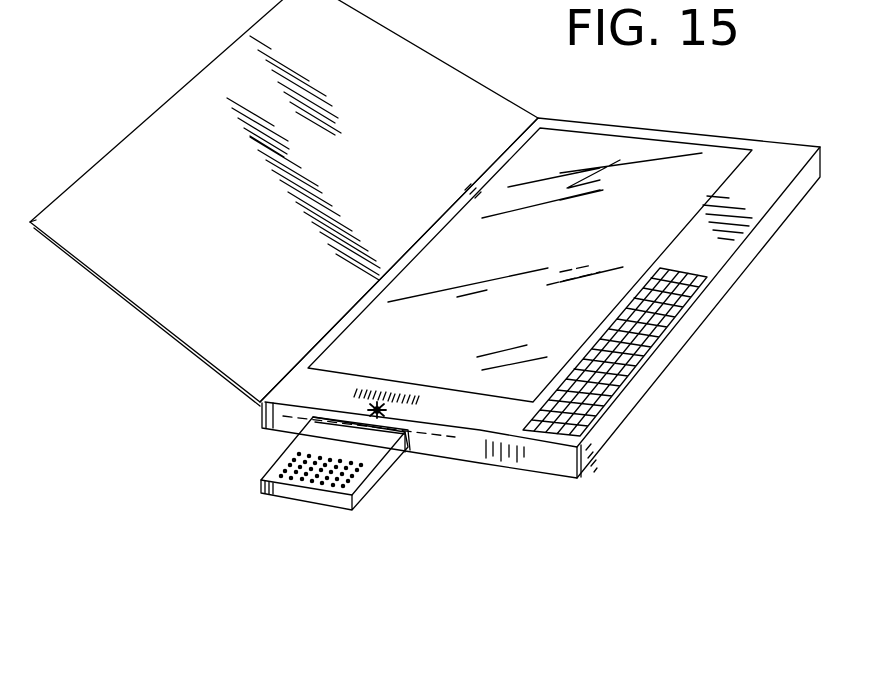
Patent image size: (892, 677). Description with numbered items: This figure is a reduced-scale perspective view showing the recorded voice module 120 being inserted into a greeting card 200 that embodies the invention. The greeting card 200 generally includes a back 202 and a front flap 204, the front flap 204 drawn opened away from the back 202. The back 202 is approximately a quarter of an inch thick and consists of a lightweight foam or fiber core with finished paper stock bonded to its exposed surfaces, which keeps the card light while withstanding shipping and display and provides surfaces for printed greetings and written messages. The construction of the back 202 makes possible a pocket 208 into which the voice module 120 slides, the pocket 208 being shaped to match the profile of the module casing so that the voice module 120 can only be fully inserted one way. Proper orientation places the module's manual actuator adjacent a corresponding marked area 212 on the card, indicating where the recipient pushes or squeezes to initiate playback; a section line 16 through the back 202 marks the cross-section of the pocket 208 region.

The greeting card 200 is at (540, 269).
The back 202 is at (763, 152).
The front flap 204 is at (425, 56).
The pocket 208 is at (383, 428).
The marked area 212 is at (382, 387).
The voice module 120 is at (260, 486).
The section line 16- 16 is at (291, 416).